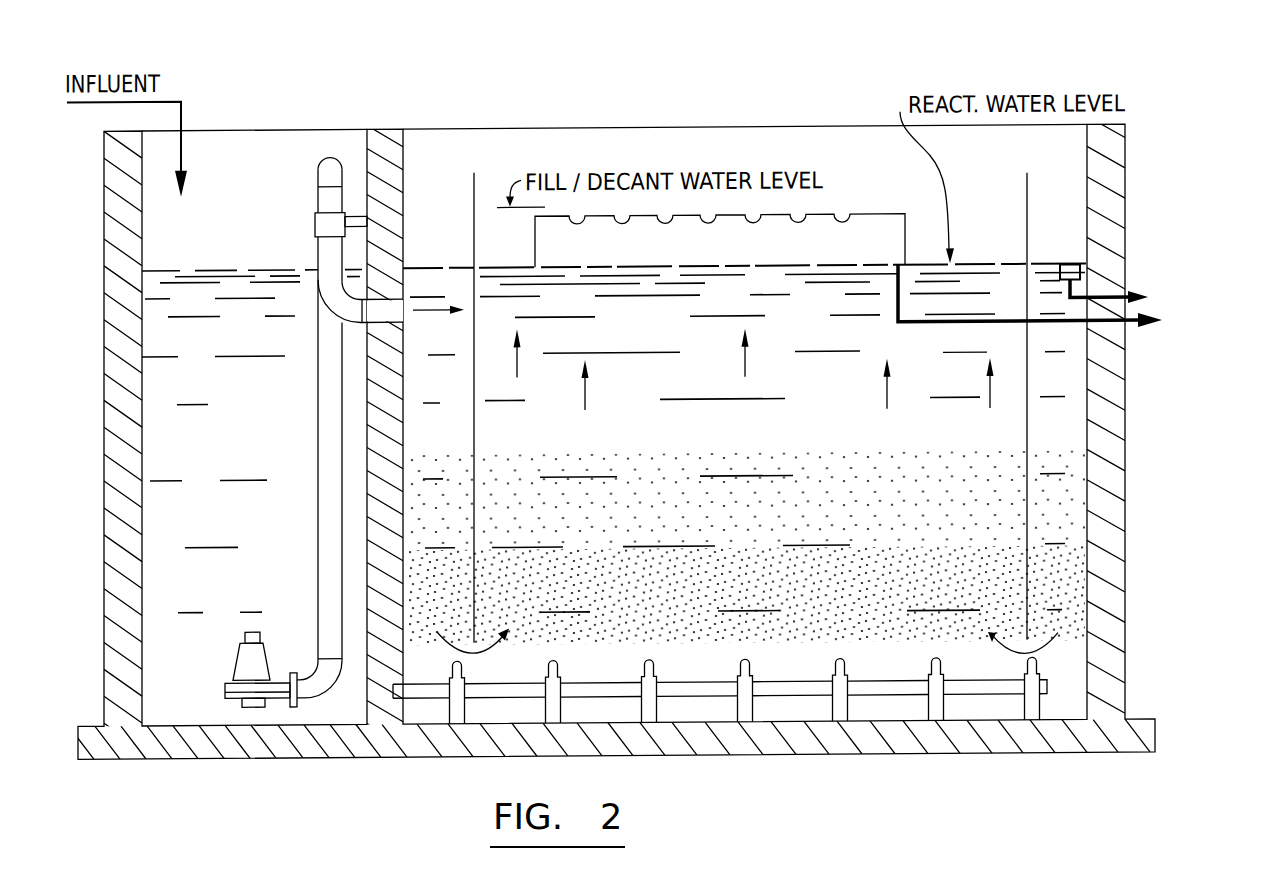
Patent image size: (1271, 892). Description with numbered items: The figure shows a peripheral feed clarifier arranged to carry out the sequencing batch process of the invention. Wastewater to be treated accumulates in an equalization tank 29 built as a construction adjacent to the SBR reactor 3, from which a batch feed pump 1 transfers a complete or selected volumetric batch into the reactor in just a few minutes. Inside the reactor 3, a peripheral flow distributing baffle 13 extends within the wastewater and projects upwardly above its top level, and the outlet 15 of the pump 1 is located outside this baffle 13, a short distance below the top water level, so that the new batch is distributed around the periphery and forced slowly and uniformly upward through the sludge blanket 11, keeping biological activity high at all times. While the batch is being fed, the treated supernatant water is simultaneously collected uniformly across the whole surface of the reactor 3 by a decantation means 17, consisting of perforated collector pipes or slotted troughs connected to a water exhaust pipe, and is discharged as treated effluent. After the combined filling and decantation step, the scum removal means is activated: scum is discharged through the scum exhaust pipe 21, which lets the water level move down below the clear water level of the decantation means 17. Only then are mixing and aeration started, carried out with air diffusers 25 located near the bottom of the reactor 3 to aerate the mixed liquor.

The batch feed pump 1 is at (266, 648).
The SBR reactor 3 is at (403, 166).
The sludge blanket 11 is at (756, 509).
The peripheral flow distributing baffle 13 is at (474, 178).
The outlet of the pump 15 is at (426, 316).
The decantation means 17 is at (885, 219).
The scum exhaust pipe 21 is at (1071, 272).
The air diffusers 25 is at (563, 672).
The equalization tank 29 is at (226, 440).